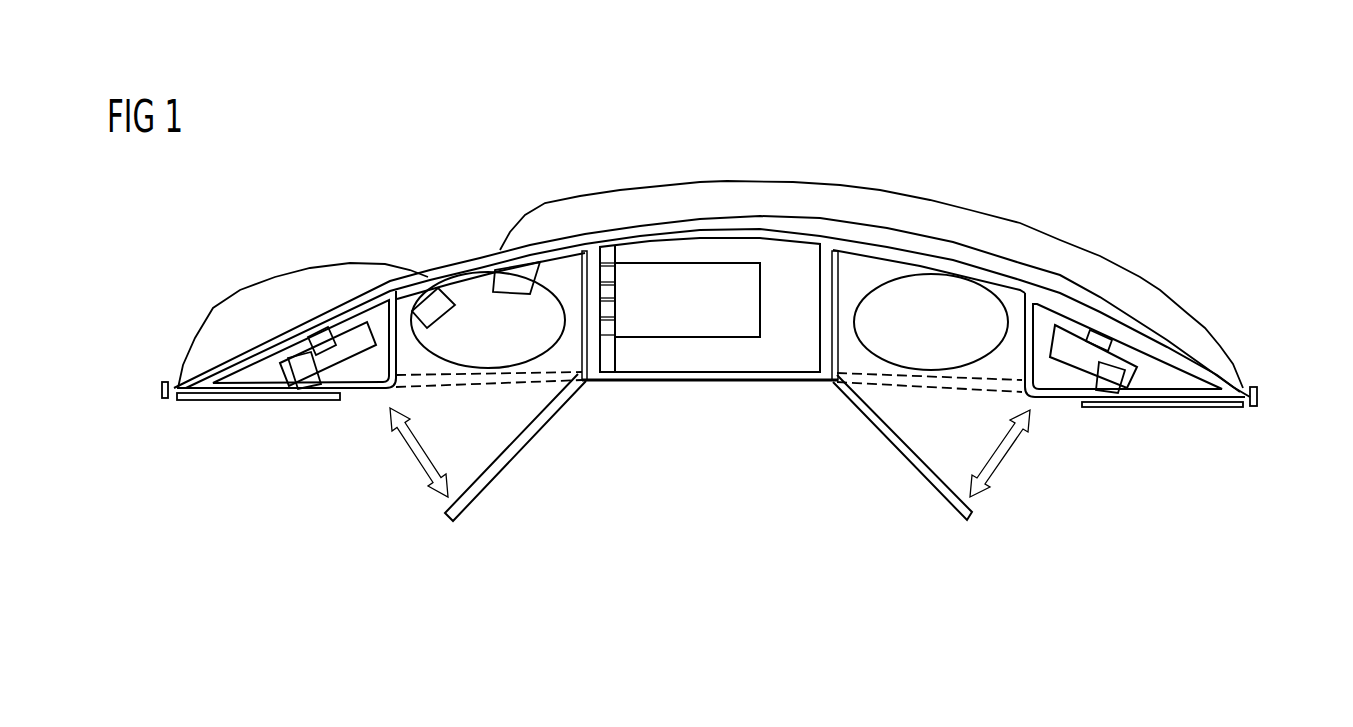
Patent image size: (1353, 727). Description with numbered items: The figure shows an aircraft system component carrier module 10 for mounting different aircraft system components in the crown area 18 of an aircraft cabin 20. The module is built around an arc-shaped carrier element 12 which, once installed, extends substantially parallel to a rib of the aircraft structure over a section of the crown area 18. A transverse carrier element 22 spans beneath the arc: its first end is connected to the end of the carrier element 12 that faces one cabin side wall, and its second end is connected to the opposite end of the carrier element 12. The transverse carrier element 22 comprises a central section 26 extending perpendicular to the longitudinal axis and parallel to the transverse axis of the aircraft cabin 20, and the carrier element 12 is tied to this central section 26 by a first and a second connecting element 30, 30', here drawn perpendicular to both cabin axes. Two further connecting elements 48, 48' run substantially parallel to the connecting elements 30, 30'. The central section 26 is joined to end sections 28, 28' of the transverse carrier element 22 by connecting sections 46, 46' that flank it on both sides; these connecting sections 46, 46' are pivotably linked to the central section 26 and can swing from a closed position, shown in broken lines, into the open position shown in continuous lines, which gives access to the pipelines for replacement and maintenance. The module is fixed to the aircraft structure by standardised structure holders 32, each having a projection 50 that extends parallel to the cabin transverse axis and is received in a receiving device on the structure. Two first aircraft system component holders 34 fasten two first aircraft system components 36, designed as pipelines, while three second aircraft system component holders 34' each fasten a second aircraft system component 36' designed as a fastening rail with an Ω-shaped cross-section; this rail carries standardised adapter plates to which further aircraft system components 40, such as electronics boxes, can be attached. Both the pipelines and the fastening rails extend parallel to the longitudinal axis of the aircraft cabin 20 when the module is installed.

The aircraft system component carrier module 10 is at (1028, 150).
The carrier element 12 is at (481, 264).
The crown area 18 is at (1134, 497).
The aircraft cabin 20 is at (723, 526).
The transverse carrier element 22 is at (1145, 412).
The central section 26 is at (697, 382).
The end section 28 is at (286, 375).
The end section 28' is at (1135, 378).
The first connecting element 30 is at (698, 270).
The second connecting element 30' is at (837, 263).
The structure holder 32 is at (171, 404).
The first aircraft system component holder 34 is at (711, 249).
The second aircraft system component holder 34' is at (715, 298).
The first aircraft system component 36 is at (709, 348).
The second aircraft system component 36' is at (706, 296).
The further aircraft system component 40 is at (349, 337).
The connecting section 46 is at (488, 447).
The connecting section 46' is at (931, 447).
The further connecting element 48 is at (489, 397).
The further connecting element 48' is at (929, 400).
The projection 50 is at (161, 389).